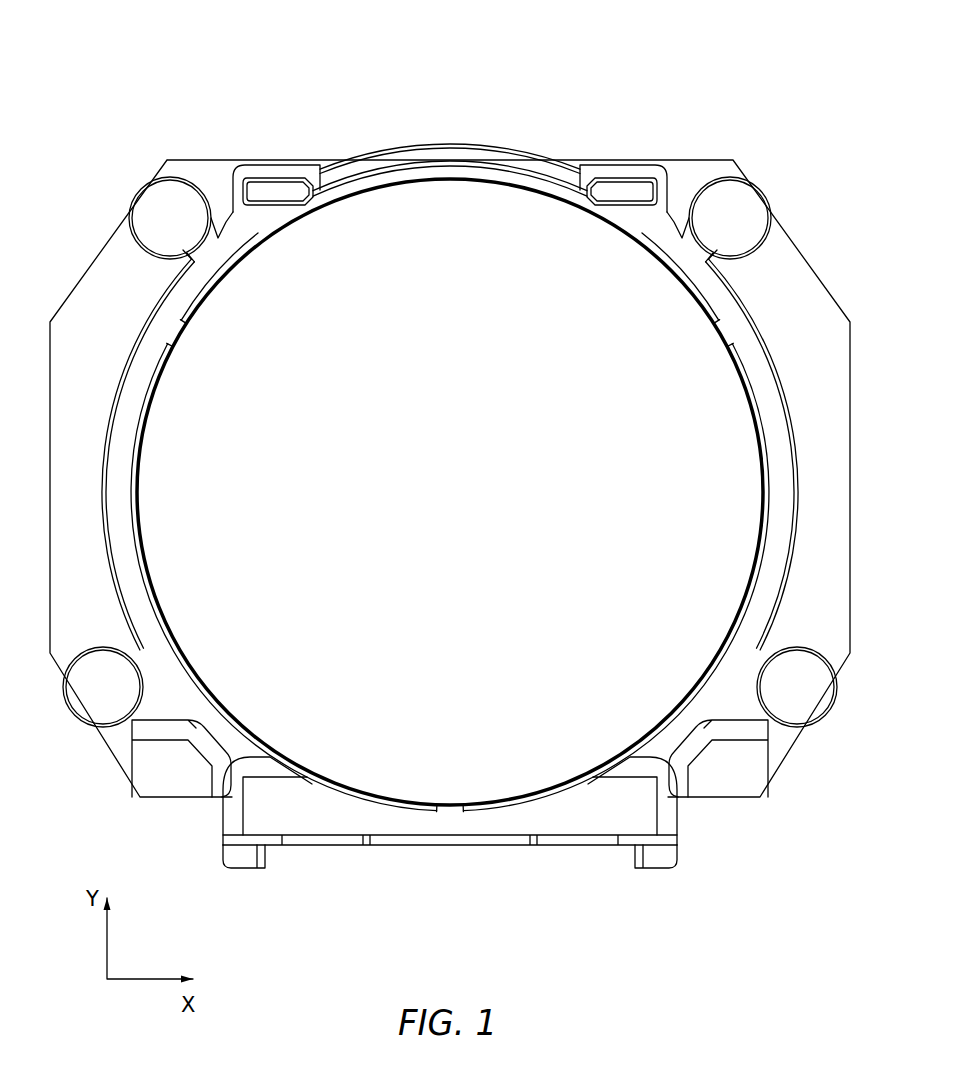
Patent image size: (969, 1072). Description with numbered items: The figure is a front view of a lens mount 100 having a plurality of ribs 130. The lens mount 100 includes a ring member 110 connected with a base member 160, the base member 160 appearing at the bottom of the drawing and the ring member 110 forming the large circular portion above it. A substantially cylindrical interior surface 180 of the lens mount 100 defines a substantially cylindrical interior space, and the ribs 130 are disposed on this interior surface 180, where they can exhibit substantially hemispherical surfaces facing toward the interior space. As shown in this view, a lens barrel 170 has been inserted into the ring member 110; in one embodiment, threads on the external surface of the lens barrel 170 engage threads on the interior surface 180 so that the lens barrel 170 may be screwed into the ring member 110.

The lens mount 100 is at (395, 82).
The ring member 110 is at (745, 300).
The ribs 130 is at (165, 340).
The base member 160 is at (679, 825).
The lens barrel 170 is at (727, 470).
The interior surface 180 is at (765, 533).